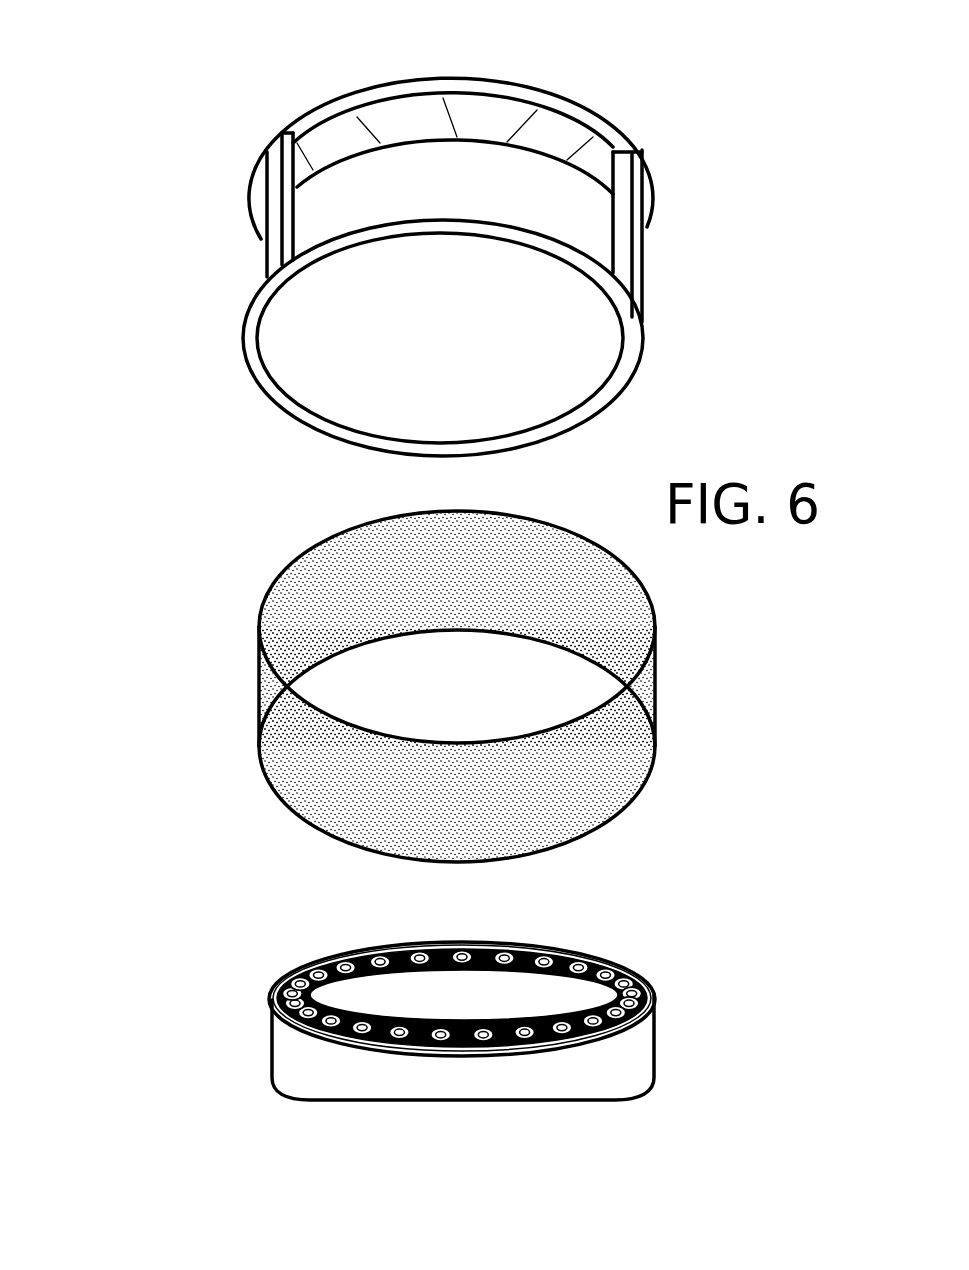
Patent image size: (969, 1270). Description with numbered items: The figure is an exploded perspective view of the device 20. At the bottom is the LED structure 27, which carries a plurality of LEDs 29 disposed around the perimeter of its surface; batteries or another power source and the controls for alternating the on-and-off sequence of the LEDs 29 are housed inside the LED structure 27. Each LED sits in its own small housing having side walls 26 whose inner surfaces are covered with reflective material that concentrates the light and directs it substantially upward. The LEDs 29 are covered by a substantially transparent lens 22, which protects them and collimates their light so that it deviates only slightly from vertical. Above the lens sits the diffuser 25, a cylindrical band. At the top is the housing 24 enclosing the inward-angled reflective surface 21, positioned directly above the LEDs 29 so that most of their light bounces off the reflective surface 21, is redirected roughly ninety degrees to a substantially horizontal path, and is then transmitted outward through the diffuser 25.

The device 20 is at (192, 117).
The reflective surface 21 is at (352, 145).
The housing 24 is at (260, 277).
The diffuser 25 is at (310, 635).
The transparent lens 22 is at (622, 965).
The side walls 26 is at (285, 973).
The LEDs 29 is at (330, 960).
The LED structure 27 is at (310, 1063).